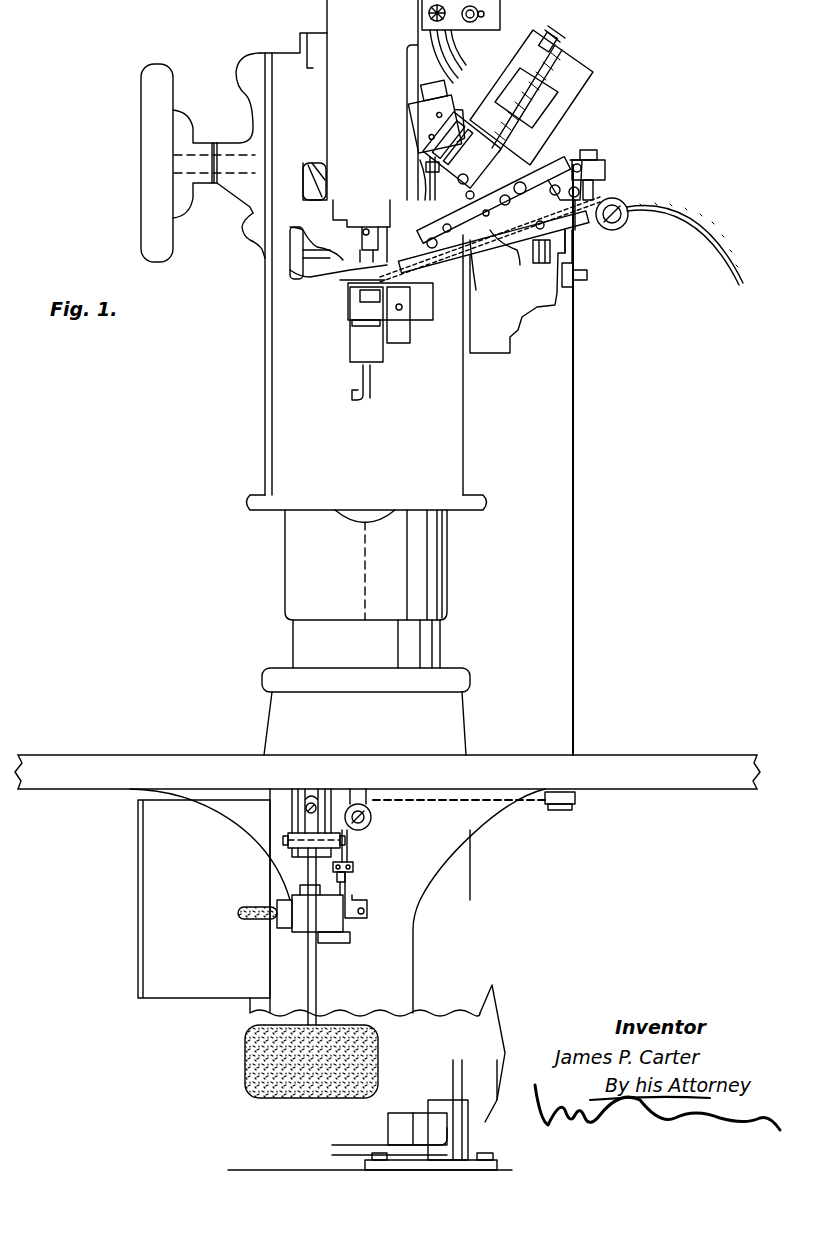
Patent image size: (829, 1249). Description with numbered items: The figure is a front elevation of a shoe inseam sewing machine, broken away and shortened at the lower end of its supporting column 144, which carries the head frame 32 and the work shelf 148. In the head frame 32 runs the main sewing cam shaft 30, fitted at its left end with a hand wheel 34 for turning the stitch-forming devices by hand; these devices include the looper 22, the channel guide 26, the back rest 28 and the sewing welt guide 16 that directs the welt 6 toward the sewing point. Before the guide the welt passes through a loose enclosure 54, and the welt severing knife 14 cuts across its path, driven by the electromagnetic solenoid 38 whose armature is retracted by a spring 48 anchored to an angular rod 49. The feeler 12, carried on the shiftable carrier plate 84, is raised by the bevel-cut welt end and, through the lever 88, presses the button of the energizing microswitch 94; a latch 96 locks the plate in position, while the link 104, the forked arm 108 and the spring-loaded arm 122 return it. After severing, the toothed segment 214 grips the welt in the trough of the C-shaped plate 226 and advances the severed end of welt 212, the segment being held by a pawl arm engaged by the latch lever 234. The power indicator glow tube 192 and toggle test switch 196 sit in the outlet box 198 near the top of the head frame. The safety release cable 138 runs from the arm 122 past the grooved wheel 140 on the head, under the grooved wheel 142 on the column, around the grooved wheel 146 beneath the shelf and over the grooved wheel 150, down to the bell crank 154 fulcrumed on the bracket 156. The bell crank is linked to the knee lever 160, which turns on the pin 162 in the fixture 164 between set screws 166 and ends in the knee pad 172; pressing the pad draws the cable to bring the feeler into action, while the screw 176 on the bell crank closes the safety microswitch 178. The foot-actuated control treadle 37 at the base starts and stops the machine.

The welt 6 is at (695, 235).
The feeler 12 is at (412, 330).
The welt severing knife 14 is at (350, 270).
The sewing welt guide 16 is at (360, 290).
The looper 22 is at (305, 235).
The channel guide 26 is at (372, 350).
The back rest 28 is at (340, 300).
The main sewing cam shaft 30 is at (230, 160).
The head frame 32 is at (268, 265).
The hand wheel 34 is at (141, 220).
The foot actuated control treadle 37 is at (355, 1150).
The electromagnetic solenoid 38 is at (570, 92).
The spring 48 is at (570, 58).
The angular rod 49 is at (548, 44).
The enclosure 54 is at (455, 270).
The carrier plate 84 is at (490, 275).
The lever 88 is at (430, 178).
The microswitch 94 is at (420, 125).
The latch 96 is at (580, 160).
The link 104 is at (576, 228).
The arm 108 is at (605, 168).
The arm 122 is at (570, 150).
The cable 138 is at (575, 528).
The grooved wheel 140 is at (612, 230).
The grooved wheel 142 is at (577, 798).
The supporting column 144 is at (462, 727).
The grooved wheel 146 is at (545, 810).
The work shelf 148 is at (678, 760).
The grooved wheel 150 is at (371, 818).
The bell crank 154 is at (350, 866).
The bracket 156 is at (330, 876).
The knee lever 160 is at (317, 990).
The pin 162 is at (288, 838).
The fixture 164 is at (298, 853).
The set screws 166 is at (306, 808).
The knee pad 172 is at (245, 1055).
The switch actuating screw 176 is at (360, 900).
The microswitch 178 is at (330, 943).
The glow tube 192 is at (428, 12).
The test switch 196 is at (420, 35).
The outlet box 198 is at (486, 12).
The severed end of welt 212 is at (350, 268).
The toothed segment 214 is at (545, 270).
The C-shaped plate 226 is at (510, 240).
The latch lever 234 is at (440, 157).